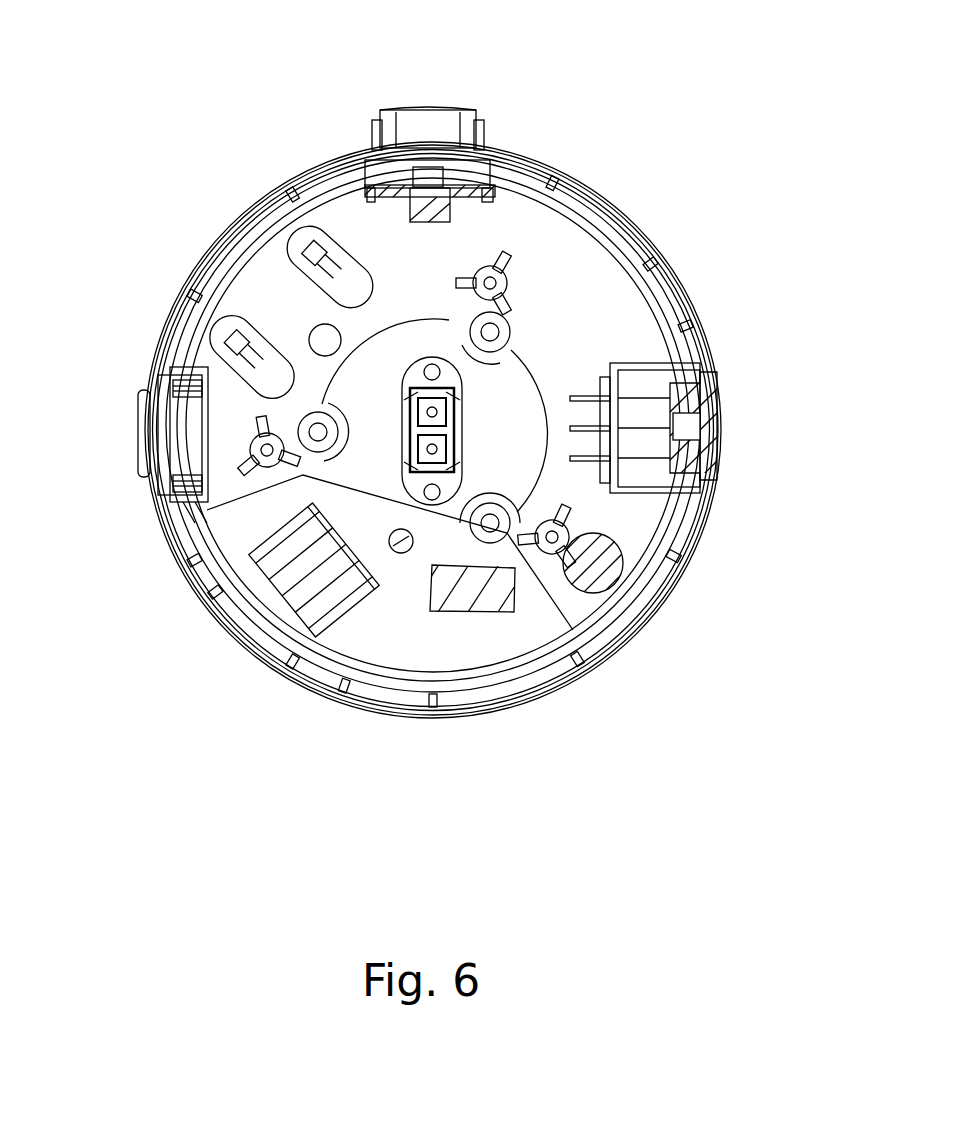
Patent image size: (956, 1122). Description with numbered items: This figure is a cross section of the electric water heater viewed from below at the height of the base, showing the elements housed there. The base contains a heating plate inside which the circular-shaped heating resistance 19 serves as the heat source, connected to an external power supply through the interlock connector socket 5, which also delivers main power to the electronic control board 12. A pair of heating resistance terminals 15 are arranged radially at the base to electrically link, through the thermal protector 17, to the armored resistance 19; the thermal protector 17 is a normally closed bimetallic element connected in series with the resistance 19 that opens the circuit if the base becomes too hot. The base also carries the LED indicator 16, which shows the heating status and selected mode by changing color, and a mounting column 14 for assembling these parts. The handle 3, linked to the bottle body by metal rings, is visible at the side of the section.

The handle 3 is at (425, 127).
The interlock connector socket 5 is at (652, 418).
The electronic control board 12 is at (390, 632).
The mounting column 14 is at (515, 280).
The heating resistance terminal 15 is at (400, 410).
The LED indicator 16 is at (170, 430).
The thermal protector 17 is at (400, 410).
The heating resistance 19 is at (597, 572).